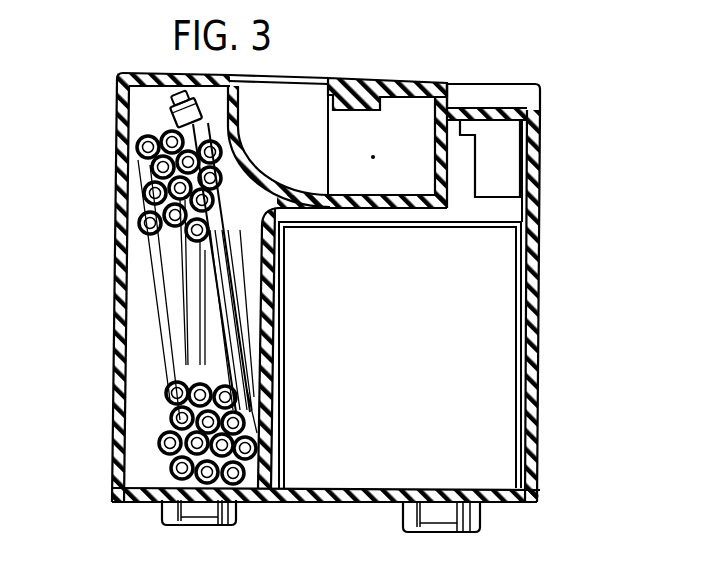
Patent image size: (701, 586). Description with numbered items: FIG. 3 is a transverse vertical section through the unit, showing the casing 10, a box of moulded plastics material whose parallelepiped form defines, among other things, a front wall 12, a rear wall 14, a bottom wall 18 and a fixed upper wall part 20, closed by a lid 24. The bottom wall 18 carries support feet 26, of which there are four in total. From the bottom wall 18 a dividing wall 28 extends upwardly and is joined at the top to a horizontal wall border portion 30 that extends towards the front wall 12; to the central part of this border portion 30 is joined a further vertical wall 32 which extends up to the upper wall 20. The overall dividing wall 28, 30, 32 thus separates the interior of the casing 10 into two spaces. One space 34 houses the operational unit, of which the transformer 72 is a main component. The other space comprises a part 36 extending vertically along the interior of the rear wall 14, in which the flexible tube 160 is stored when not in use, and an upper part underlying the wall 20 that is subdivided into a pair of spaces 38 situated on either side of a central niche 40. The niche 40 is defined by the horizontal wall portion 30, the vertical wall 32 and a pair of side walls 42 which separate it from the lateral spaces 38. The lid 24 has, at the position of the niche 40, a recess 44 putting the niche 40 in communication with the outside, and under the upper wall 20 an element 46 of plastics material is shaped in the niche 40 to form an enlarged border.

The casing 10 is at (537, 413).
The front wall 12 is at (537, 320).
The rear wall 14 is at (116, 394).
The bottom wall 18 is at (363, 496).
The fixed upper wall part 20 is at (409, 82).
The lid 24 is at (150, 64).
The support feet 26 is at (238, 510).
The dividing wall 28 is at (279, 322).
The horizontal wall border portion 30 is at (327, 220).
The vertical wall 32 is at (507, 161).
The space 34 is at (259, 237).
The vertical part of space 36 is at (136, 343).
The lateral spaces 38 is at (468, 167).
The central niche 40 is at (401, 145).
The side walls 42 is at (326, 164).
The recess 44 is at (243, 146).
The enlarged border element 46 is at (332, 110).
The transformer 72 is at (490, 378).
The flexible tube 160 is at (172, 257).